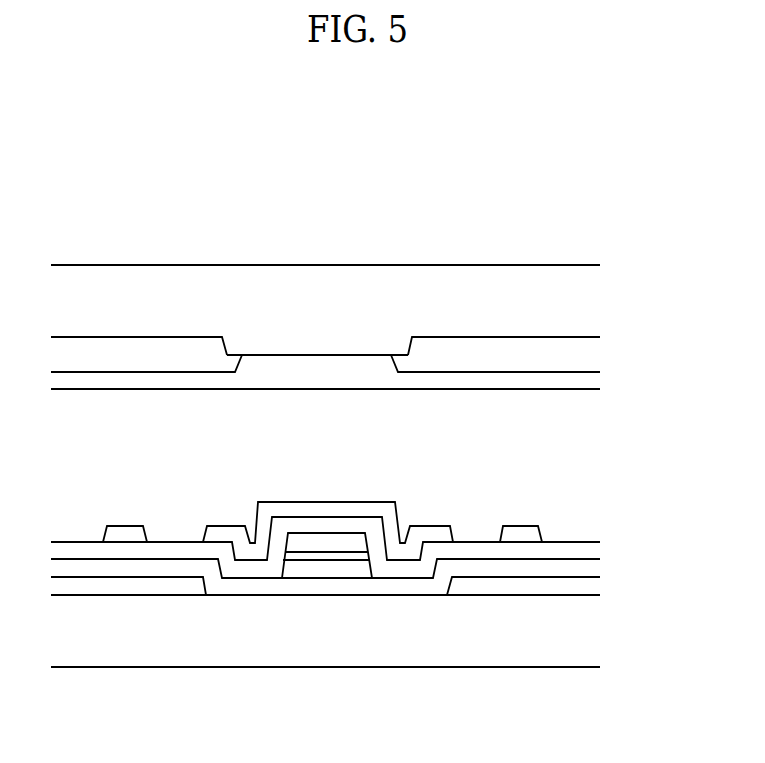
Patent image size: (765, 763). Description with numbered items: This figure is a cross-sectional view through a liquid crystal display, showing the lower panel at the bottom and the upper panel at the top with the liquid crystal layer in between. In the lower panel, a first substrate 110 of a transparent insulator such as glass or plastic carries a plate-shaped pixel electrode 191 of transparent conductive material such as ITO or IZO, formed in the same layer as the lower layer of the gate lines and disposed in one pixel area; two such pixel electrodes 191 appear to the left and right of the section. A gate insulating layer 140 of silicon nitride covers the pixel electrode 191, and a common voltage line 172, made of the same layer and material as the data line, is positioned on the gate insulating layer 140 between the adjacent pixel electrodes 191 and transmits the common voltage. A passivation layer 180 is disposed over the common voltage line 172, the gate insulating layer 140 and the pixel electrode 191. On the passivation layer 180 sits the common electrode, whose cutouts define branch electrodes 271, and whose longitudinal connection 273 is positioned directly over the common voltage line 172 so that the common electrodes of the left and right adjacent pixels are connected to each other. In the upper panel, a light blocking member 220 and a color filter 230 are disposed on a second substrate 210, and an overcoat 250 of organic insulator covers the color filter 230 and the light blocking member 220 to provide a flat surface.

The first substrate 110 is at (583, 633).
The gate insulating layer 140 is at (593, 568).
The common voltage line 172 is at (335, 535).
The passivation layer 180 is at (592, 551).
The pixel electrode 191 is at (127, 588).
The second substrate 210 is at (478, 290).
The light blocking member 220 is at (277, 347).
The color filter 230 is at (143, 355).
The overcoat 250 is at (362, 373).
The branch electrodes 271 is at (125, 535).
The longitudinal connection 273 is at (327, 508).